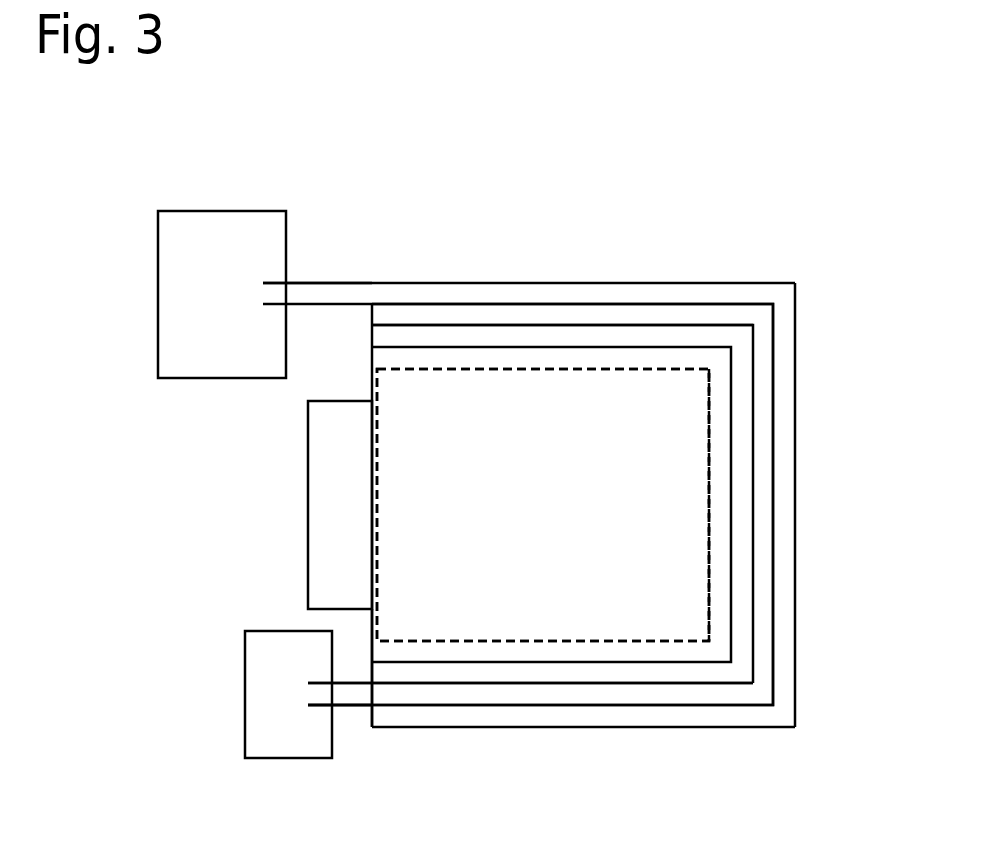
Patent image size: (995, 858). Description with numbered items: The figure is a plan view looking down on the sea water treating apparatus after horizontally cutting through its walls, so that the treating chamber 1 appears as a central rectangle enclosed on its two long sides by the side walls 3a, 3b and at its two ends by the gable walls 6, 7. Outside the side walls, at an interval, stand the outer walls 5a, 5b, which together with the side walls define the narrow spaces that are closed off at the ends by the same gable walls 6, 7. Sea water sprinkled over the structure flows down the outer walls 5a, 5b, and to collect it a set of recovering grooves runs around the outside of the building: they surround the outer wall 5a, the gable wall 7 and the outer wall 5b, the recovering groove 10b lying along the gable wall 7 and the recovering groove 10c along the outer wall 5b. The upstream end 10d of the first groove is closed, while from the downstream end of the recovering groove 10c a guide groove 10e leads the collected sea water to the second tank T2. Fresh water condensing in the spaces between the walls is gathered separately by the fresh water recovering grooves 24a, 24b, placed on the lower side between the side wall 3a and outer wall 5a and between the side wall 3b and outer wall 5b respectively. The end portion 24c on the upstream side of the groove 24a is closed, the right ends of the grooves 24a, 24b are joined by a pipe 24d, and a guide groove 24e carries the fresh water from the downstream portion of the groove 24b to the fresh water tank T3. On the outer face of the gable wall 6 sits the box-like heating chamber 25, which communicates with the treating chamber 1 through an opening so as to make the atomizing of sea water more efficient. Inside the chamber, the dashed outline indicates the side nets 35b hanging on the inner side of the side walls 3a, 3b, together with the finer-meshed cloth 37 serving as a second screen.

The treating chamber 1 is at (539, 511).
The side wall 3a is at (603, 326).
The side wall 3b is at (593, 683).
The outer wall 5a is at (687, 305).
The outer wall 5b is at (669, 705).
The gable wall 6 is at (375, 615).
The gable wall 7 is at (773, 538).
The recovering groove 10b is at (783, 442).
The recovering groove 10c is at (593, 293).
The upstream end 10d is at (373, 722).
The guide groove 10e is at (307, 295).
The fresh water recovering groove 24a is at (477, 315).
The fresh water recovering groove 24b is at (500, 695).
The end portion 24c is at (370, 312).
The pipe 24d is at (762, 368).
The guide groove 24e is at (363, 695).
The heating chamber 25 is at (307, 477).
The side net 35b is at (528, 369).
The cloth (second screen) 37 is at (635, 347).
The second tank T2 is at (222, 222).
The fresh water tank T3 is at (278, 748).